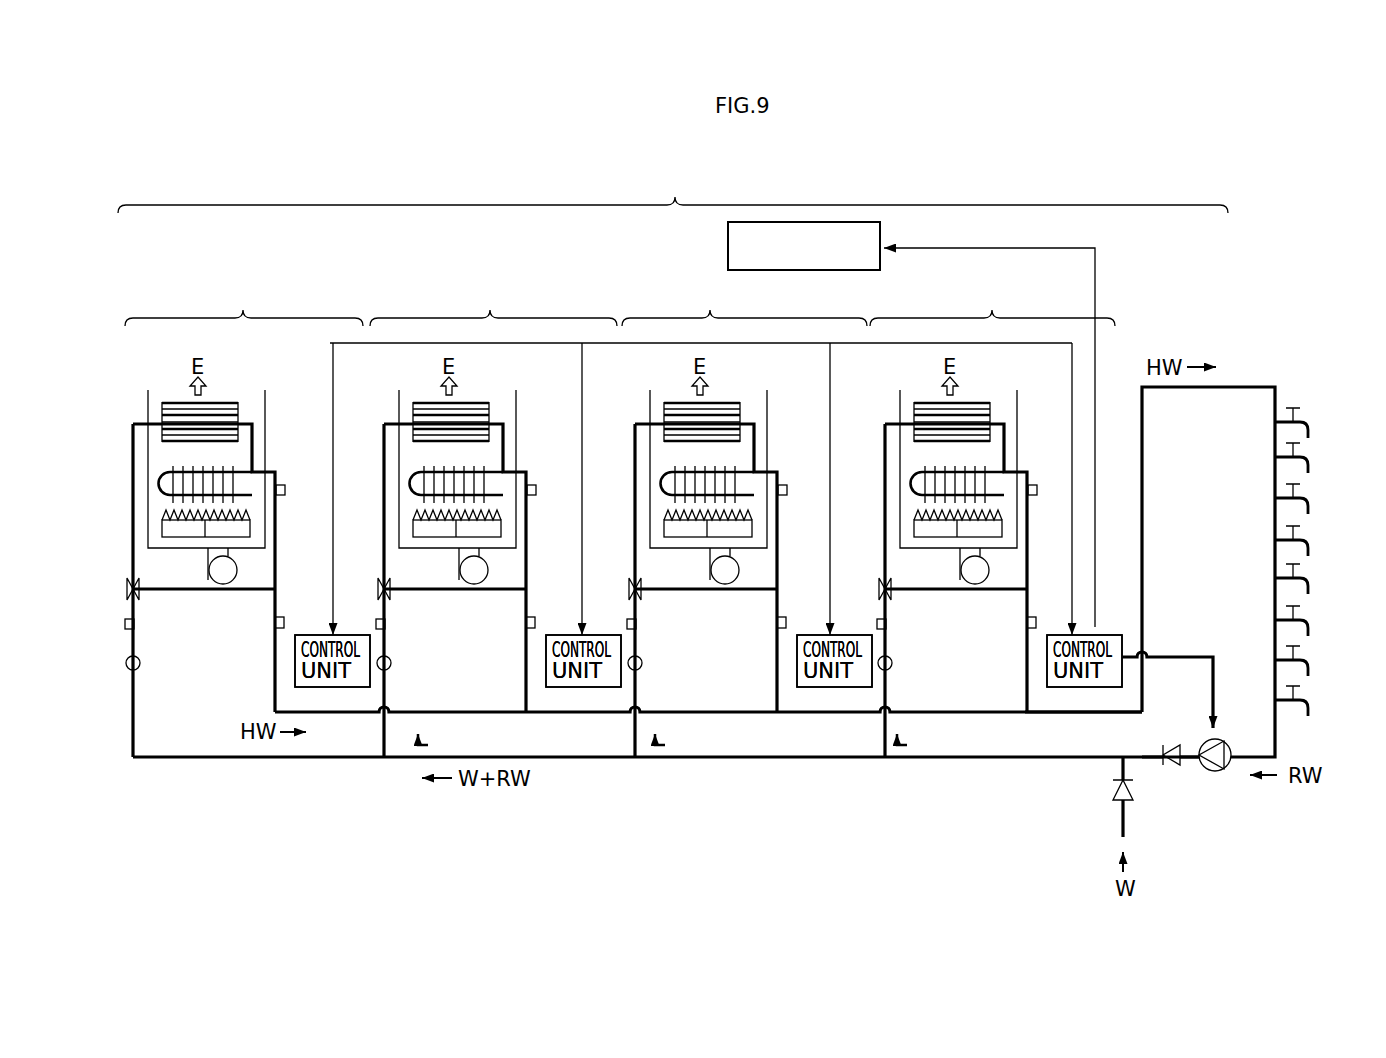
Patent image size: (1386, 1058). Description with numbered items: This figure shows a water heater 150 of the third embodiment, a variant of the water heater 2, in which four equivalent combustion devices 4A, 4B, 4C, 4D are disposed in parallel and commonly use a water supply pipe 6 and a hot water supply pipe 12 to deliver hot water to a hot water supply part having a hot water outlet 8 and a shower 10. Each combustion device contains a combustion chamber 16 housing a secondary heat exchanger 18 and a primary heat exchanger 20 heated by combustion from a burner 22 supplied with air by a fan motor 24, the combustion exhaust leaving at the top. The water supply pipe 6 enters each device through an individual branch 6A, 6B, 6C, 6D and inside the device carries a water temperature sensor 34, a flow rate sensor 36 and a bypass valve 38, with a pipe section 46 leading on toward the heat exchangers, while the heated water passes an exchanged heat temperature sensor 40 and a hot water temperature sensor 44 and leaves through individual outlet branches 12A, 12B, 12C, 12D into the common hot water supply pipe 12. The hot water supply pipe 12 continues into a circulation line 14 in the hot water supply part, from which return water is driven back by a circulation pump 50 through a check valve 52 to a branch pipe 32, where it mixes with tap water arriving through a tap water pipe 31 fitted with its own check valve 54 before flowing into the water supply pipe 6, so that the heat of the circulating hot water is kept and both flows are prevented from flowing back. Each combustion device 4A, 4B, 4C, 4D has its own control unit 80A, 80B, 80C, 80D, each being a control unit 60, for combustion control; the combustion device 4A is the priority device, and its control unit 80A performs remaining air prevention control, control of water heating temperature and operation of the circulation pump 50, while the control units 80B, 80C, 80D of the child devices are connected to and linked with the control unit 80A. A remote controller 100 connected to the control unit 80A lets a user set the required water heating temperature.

The water heater 150 is at (673, 192).
The water heater 2 is at (673, 192).
The remote controller 100 is at (728, 250).
The combustion device 4D is at (244, 306).
The combustion device 4C is at (493, 306).
The combustion device 4B is at (744, 306).
The combustion device 4A is at (992, 306).
The circulation line 14 is at (1247, 387).
The hot water outlet 8 is at (1330, 559).
The shower 10 is at (1322, 402).
The combustion chamber 16 is at (608, 469).
The secondary heat exchanger 18 is at (599, 399).
The primary heat exchanger 20 is at (549, 484).
The burner 22 is at (615, 525).
The fan motor 24 is at (573, 566).
The water temperature sensor 34 is at (532, 629).
The flow rate sensor 36 is at (532, 669).
The bypass valve 38 is at (492, 568).
The exchanged heat temperature sensor 40 is at (672, 469).
The hot water temperature sensor 44 is at (675, 600).
The inlet pipe 46 is at (580, 613).
The water supply pipe 6D is at (137, 735).
The water supply pipe 6C is at (410, 590).
The water supply pipe 6B is at (661, 590).
The water supply pipe 6A is at (911, 590).
The hot water outlet pipe 12D is at (204, 568).
The hot water outlet pipe 12C is at (455, 568).
The hot water outlet pipe 12B is at (706, 568).
The hot water outlet pipe 12A is at (956, 568).
The control unit 80D is at (332, 734).
The control unit 80C is at (583, 734).
The control unit 80B is at (834, 734).
The control unit 80A is at (1062, 687).
The control unit 60 is at (708, 661).
The water supply pipe 6 is at (928, 758).
The hot water supply pipe 12 is at (977, 713).
The circulation pump 50 is at (1215, 771).
The check valve 52 is at (1173, 742).
The branch pipe 32 is at (1120, 750).
The check valve 54 is at (1133, 792).
The tap water pipe 31 is at (1125, 822).